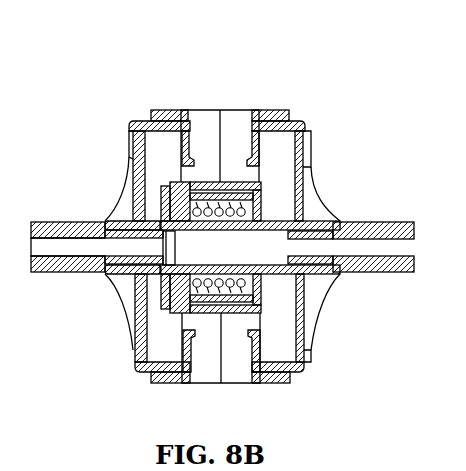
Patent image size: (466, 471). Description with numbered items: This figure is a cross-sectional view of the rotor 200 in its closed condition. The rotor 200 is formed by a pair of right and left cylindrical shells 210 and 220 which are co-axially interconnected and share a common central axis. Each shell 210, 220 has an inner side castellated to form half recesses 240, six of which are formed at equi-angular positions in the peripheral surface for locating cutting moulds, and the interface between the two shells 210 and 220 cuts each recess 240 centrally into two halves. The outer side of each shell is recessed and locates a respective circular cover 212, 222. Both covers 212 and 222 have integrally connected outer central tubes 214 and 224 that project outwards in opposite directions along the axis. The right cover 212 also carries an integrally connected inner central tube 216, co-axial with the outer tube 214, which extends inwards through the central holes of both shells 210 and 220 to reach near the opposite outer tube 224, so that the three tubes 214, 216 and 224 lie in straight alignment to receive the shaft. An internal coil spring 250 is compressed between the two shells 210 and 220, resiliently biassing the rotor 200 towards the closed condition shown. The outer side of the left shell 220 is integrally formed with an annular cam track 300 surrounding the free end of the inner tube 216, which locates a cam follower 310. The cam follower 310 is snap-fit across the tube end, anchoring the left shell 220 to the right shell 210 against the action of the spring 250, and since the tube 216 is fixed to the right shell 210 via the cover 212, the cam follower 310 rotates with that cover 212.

The rotor 200 is at (361, 64).
The right cylindrical shell 210 is at (276, 110).
The circular cover 212 is at (305, 168).
The outer central tube 214 is at (371, 272).
The inner central tube 216 is at (278, 275).
The left cylindrical shell 220 is at (170, 108).
The circular cover 222 is at (130, 160).
The outer central tube 224 is at (66, 273).
The recess 240 is at (210, 122).
The internal coil spring 250 is at (231, 186).
The annular cam track 300 is at (170, 303).
The cam follower 310 is at (161, 208).